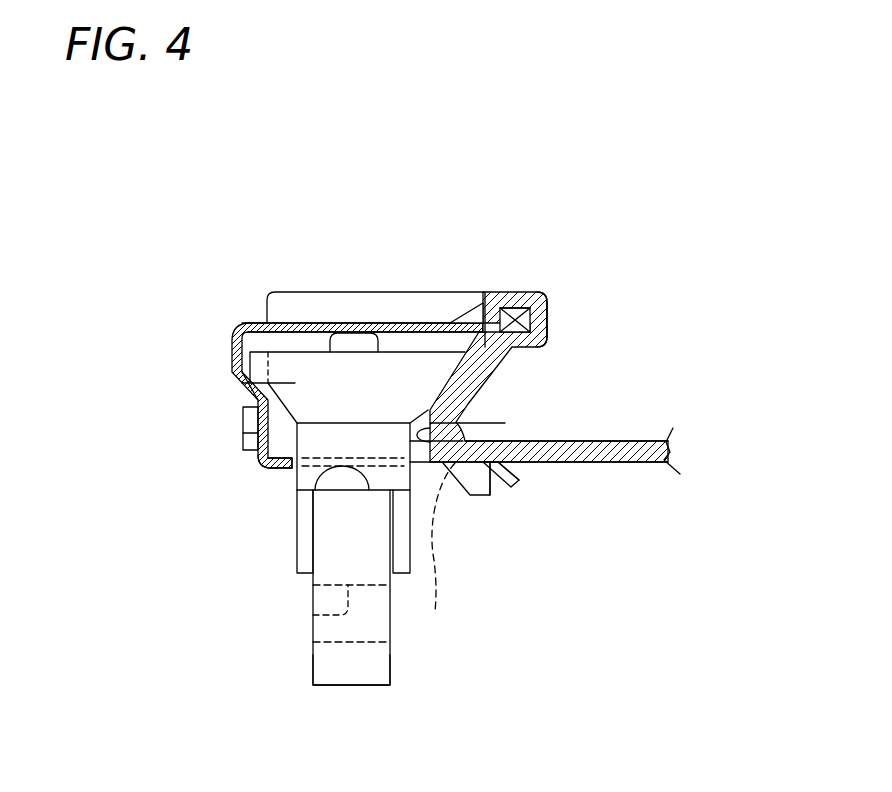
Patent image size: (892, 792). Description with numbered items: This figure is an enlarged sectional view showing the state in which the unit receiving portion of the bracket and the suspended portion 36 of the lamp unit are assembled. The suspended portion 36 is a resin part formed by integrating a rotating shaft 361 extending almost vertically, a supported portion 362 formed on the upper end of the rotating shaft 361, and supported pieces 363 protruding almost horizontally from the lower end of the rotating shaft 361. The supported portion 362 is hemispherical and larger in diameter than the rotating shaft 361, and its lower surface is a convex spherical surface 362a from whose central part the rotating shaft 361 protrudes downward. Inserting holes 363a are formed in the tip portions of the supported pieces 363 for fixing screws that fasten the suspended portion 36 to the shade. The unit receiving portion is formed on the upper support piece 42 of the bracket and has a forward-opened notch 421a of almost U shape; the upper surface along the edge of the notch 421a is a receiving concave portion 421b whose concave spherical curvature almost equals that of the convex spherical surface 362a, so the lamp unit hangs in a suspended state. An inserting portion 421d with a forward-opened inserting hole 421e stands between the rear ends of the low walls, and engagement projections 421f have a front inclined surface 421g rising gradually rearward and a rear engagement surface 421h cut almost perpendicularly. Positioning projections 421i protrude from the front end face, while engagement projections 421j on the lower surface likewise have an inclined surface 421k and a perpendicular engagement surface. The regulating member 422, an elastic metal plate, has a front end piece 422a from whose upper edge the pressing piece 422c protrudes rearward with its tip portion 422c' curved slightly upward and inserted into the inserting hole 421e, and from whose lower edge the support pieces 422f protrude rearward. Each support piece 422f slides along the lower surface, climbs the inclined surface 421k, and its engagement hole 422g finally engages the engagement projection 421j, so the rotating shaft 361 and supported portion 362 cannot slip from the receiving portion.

The suspended portion 36 is at (313, 655).
The rotating shaft 361 is at (297, 548).
The supported portion 362 is at (293, 350).
The convex spherical surface 362a is at (241, 382).
The supported piece 363 is at (367, 672).
The inserting hole 363a is at (313, 615).
The upper support piece 42 is at (617, 443).
The notch 421a is at (473, 427).
The receiving concave portion 421b is at (500, 392).
The inserting portion 421d is at (543, 293).
The inserting hole 421e is at (547, 323).
The engagement projection 421f is at (483, 300).
The inclined surface 421g is at (453, 321).
The engagement surface 421h is at (510, 305).
The positioning projection 421i is at (243, 423).
The engagement projection 421j is at (490, 497).
The inclined surface 421k is at (463, 492).
The regulating member 422 is at (238, 335).
The front end piece 422a is at (243, 435).
The pressing piece 422c is at (361, 236).
The tip portion 422c' is at (534, 244).
The support piece 422f is at (527, 466).
The engagement hole 422g is at (438, 550).